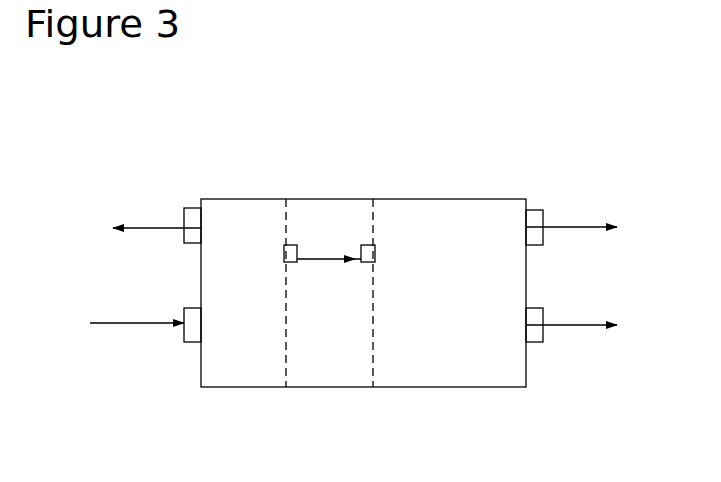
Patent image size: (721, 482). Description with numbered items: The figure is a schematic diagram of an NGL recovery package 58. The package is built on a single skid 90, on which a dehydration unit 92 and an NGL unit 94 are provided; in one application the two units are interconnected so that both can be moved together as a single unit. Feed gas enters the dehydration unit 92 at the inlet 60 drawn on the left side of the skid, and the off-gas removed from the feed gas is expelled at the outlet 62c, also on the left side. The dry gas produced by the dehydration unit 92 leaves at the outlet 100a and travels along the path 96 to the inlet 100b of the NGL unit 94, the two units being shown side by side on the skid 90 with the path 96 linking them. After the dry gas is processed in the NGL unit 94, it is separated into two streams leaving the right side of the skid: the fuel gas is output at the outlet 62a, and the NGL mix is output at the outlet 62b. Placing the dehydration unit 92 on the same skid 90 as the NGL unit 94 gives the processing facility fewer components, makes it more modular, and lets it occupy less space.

The NGL recovery package 58 is at (361, 70).
The single skid 90 is at (337, 199).
The dehydration unit 92 is at (237, 218).
The NGL unit 94 is at (439, 363).
The path 96 is at (333, 265).
The outlet 100a is at (296, 243).
The inlet 100b is at (367, 199).
The inlet 60 is at (186, 343).
The outlet 62a is at (572, 222).
The outlet 62b is at (542, 343).
The outlet 62c is at (182, 217).